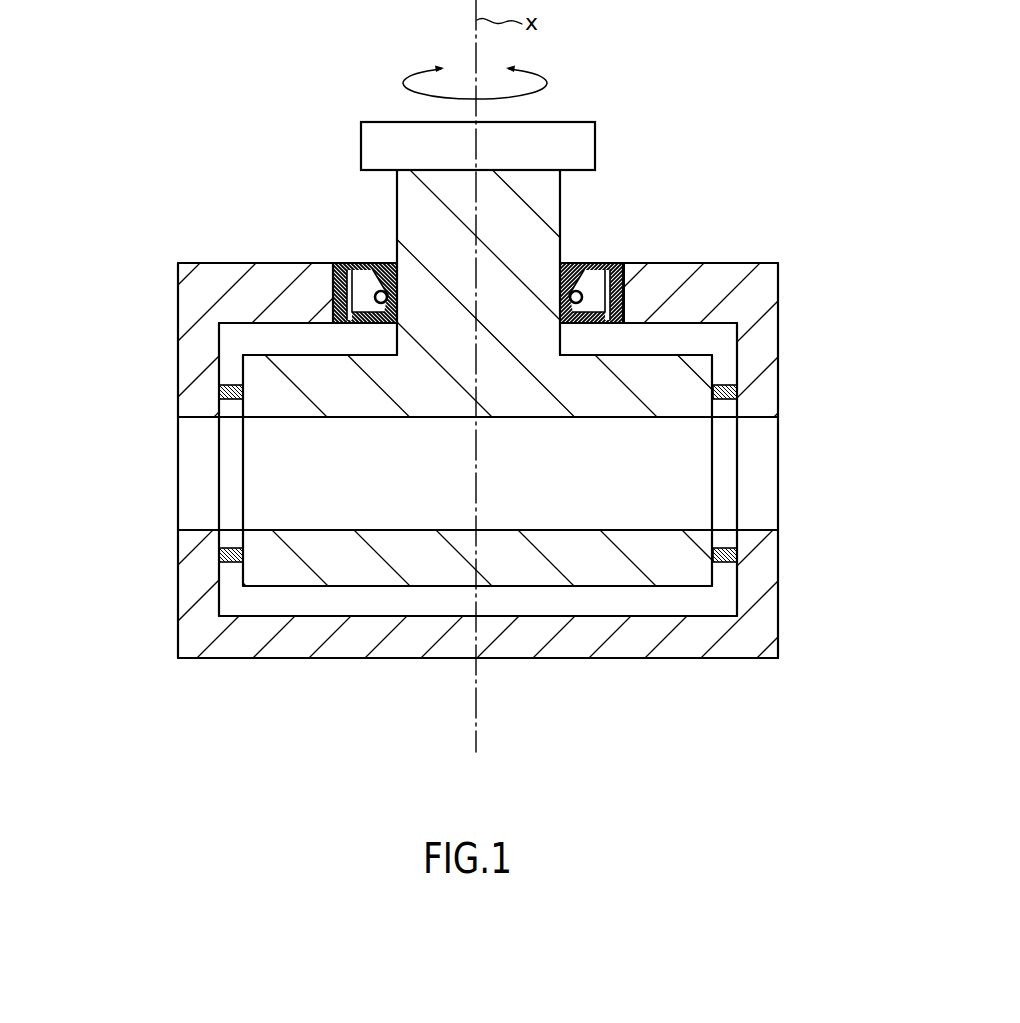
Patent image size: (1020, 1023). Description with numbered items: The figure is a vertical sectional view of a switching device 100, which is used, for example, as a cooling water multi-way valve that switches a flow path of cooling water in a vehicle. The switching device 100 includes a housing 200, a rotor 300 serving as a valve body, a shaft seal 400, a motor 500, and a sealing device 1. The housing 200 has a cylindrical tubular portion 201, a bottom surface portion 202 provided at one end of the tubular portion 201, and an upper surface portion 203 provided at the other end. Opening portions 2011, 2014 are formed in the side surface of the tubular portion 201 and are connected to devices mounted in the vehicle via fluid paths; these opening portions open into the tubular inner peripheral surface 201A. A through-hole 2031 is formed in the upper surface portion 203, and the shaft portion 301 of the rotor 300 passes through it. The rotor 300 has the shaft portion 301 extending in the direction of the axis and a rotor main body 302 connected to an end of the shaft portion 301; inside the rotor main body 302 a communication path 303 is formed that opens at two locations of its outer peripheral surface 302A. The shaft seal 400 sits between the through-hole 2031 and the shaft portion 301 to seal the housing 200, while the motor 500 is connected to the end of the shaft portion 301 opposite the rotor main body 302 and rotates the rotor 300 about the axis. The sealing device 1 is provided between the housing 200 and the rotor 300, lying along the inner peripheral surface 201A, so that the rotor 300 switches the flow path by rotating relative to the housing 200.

The switching device 100 is at (788, 160).
The housing 200 is at (778, 283).
The tubular portion 201 is at (762, 346).
The inner peripheral surface 201A is at (220, 588).
The opening portion 2011 is at (752, 530).
The opening portion 2014 is at (200, 530).
The bottom surface portion 202 is at (557, 660).
The upper surface portion 203 is at (727, 273).
The through-hole 2031 is at (622, 263).
The rotor 300 is at (562, 200).
The shaft portion 301 is at (553, 121).
The rotor main body 302 is at (268, 372).
The outer peripheral surface 302A is at (242, 366).
The communication path 303 is at (293, 418).
The shaft seal 400 is at (357, 262).
The motor 500 is at (373, 121).
The sealing device 1 is at (221, 384).